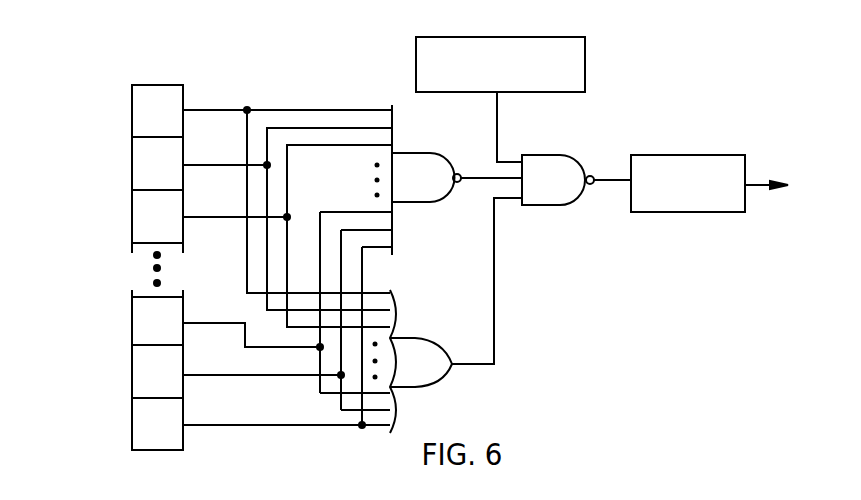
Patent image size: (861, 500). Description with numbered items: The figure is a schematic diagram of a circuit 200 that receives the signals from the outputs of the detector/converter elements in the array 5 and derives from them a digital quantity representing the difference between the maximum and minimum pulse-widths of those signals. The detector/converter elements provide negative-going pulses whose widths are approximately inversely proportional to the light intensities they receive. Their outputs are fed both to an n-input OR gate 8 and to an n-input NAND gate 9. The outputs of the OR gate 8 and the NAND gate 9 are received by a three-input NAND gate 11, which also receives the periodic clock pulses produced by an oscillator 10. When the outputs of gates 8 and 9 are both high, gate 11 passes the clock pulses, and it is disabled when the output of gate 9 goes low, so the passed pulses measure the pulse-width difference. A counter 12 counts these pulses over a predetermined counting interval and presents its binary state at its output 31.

The array of detector/converter elements 5 is at (152, 73).
The circuit 200 is at (222, 71).
The oscillator 10 is at (416, 63).
The n-input NAND gate 9 is at (413, 152).
The n-input OR gate 8 is at (415, 338).
The 3-input NAND gate 11 is at (547, 153).
The counter 12 is at (679, 155).
The counter output 31 is at (758, 182).